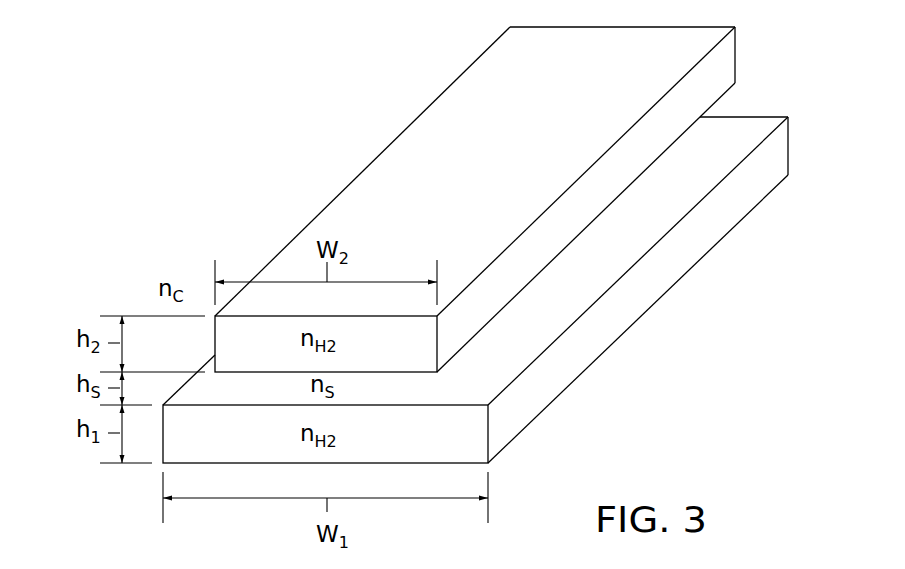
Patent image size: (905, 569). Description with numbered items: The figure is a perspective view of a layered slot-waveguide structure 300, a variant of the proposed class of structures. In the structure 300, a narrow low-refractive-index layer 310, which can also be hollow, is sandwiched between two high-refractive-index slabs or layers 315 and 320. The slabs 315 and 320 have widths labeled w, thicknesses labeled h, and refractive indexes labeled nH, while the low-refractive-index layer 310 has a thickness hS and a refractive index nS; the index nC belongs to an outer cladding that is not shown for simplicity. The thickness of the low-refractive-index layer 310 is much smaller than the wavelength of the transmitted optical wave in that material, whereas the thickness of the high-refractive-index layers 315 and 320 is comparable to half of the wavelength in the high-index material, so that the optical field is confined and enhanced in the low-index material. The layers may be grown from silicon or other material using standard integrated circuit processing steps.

The layered slot-waveguide structure 300 is at (277, 108).
The low-refractive-index layer 310 is at (725, 106).
The high-refractive-index slab 315 is at (737, 55).
The high-refractive-index slab 320 is at (790, 145).